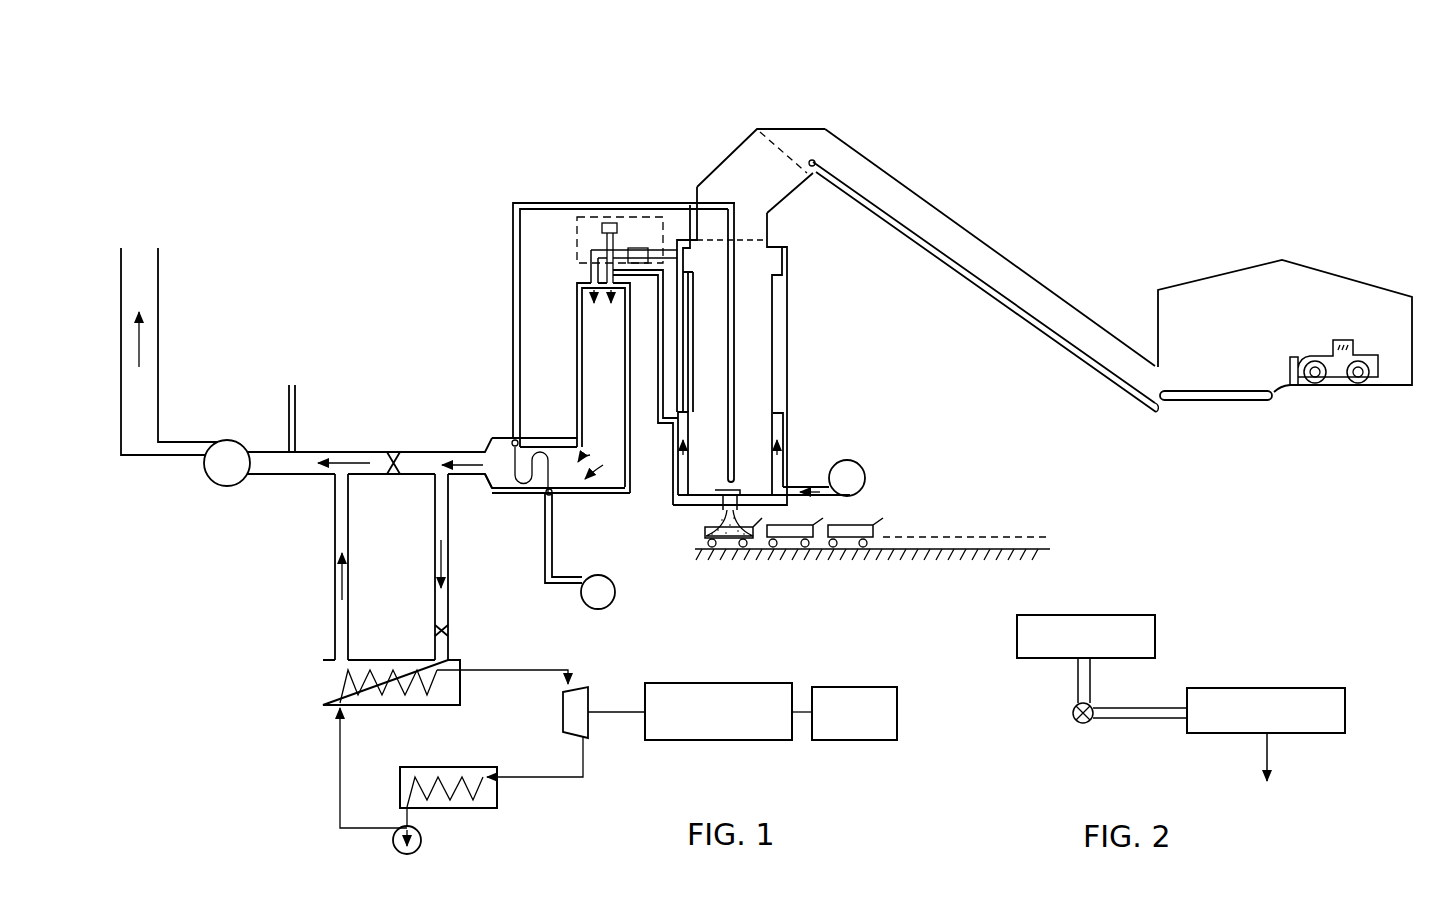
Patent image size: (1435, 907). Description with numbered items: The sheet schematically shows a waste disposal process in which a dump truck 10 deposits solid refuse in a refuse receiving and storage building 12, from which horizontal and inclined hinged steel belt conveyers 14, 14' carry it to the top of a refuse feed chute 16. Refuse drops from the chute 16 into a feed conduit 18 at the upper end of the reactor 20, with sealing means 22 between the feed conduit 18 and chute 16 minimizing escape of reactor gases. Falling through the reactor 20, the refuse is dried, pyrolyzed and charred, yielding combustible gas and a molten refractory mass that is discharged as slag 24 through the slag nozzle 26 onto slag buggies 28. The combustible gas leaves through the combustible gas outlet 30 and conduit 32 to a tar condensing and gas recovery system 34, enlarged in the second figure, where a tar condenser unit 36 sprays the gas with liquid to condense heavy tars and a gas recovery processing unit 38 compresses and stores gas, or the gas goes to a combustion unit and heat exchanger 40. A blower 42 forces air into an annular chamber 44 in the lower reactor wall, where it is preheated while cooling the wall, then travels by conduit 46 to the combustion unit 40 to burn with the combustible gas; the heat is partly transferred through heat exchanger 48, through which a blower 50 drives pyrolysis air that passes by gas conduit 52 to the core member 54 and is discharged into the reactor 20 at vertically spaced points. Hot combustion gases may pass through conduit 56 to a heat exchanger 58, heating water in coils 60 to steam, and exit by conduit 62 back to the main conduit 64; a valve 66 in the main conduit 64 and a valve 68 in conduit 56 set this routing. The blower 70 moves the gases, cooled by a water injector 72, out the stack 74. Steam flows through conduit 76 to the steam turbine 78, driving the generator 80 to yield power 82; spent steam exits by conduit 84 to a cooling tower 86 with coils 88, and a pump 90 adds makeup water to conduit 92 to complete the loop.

In FIG. 1, the vehicle / loader 10 is at (1342, 384).
In FIG. 1, the refuse receiving and storage building 12 is at (1353, 278).
In FIG. 1, the horizontal hinged steel belt conveyer 14 is at (1216, 422).
In FIG. 1, the inclined hinged steel belt conveyer 14' is at (983, 286).
In FIG. 1, the refuse feed chute 16 is at (995, 253).
In FIG. 1, the feed conduit 18 is at (731, 150).
In FIG. 1, the reactor 20 is at (792, 316).
In FIG. 1, the sealing means 22 is at (792, 135).
In FIG. 1, the slag 24 is at (730, 550).
In FIG. 1, the slag nozzle 26 is at (723, 508).
In FIG. 1, the slag buggies 28 is at (850, 537).
In FIG. 1, the combustible gas outlet 30 is at (685, 236).
In FIG. 1, the conduit 32 is at (673, 247).
In FIG. 1, the tar condensing and gas recovery system 34 is at (570, 247).
In FIG. 2, the tar condensing and gas recovery system 34 is at (1202, 654).
In FIG. 2, the tar condenser unit 36 is at (1315, 688).
In FIG. 2, the gas recovery processing unit 38 is at (1097, 615).
In FIG. 1, the combustion unit and heat exchanger 40 is at (573, 358).
In FIG. 1, the blower 42 is at (870, 477).
In FIG. 1, the annular chamber 44 is at (784, 430).
In FIG. 1, the conduit 46 is at (659, 412).
In FIG. 1, the heat exchanger 48 is at (550, 472).
In FIG. 1, the blower 50 is at (615, 583).
In FIG. 1, the gas conduit 52 is at (513, 300).
In FIG. 1, the core member 54 is at (740, 352).
In FIG. 1, the conduit 56 is at (452, 540).
In FIG. 1, the heat exchanger 58 is at (466, 656).
In FIG. 1, the coils 60 is at (433, 690).
In FIG. 1, the conduit 62 is at (335, 617).
In FIG. 1, the main conduit 64 is at (345, 452).
In FIG. 1, the valve 66 is at (398, 460).
In FIG. 1, the valve 68 is at (446, 627).
In FIG. 1, the blower 70 is at (213, 487).
In FIG. 1, the water injector 72 is at (296, 398).
In FIG. 1, the stack 74 is at (159, 331).
In FIG. 1, the conduit 76 is at (532, 670).
In FIG. 1, the steam turbine 78 is at (563, 715).
In FIG. 1, the generator 80 is at (750, 683).
In FIG. 1, the power 82 is at (857, 687).
In FIG. 1, the conduit 84 is at (565, 780).
In FIG. 1, the cooling tower 86 is at (464, 763).
In FIG. 1, the coils 88 is at (472, 792).
In FIG. 1, the pump 90 is at (422, 843).
In FIG. 1, the conduit 92 is at (340, 762).